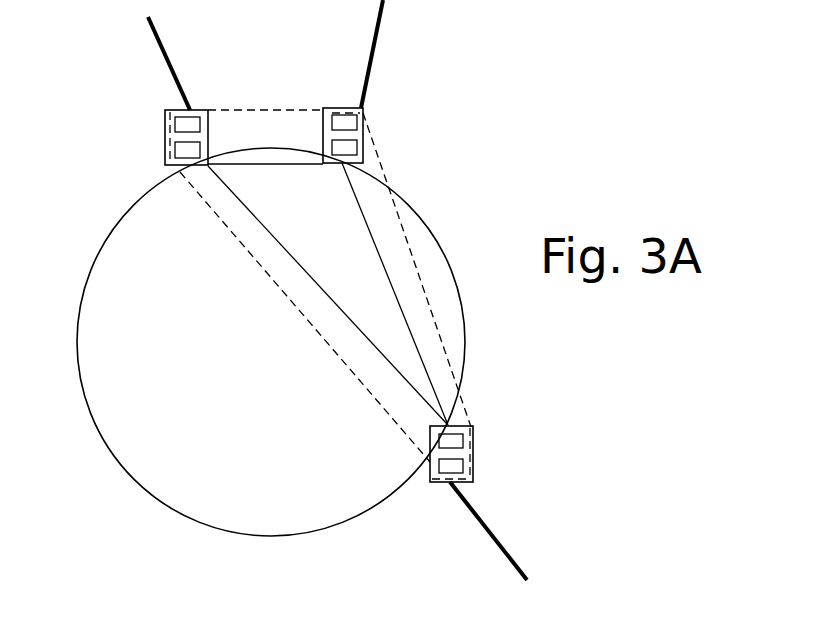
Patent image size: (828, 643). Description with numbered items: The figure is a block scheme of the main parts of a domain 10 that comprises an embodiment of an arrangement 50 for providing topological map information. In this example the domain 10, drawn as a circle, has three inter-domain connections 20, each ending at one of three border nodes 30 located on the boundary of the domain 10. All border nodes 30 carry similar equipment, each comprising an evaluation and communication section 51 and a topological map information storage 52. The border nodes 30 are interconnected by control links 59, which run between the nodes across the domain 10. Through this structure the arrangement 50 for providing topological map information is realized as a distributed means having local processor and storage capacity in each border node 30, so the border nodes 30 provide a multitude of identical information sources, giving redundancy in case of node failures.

The domain 10 is at (293, 534).
The inter-domain connection 20 is at (146, 24).
The border node 30 is at (192, 110).
The arrangement for providing topological map information 50 is at (260, 270).
The evaluation and communication section 51 is at (178, 125).
The topological map information storage 52 is at (178, 150).
The control link 59 is at (248, 166).